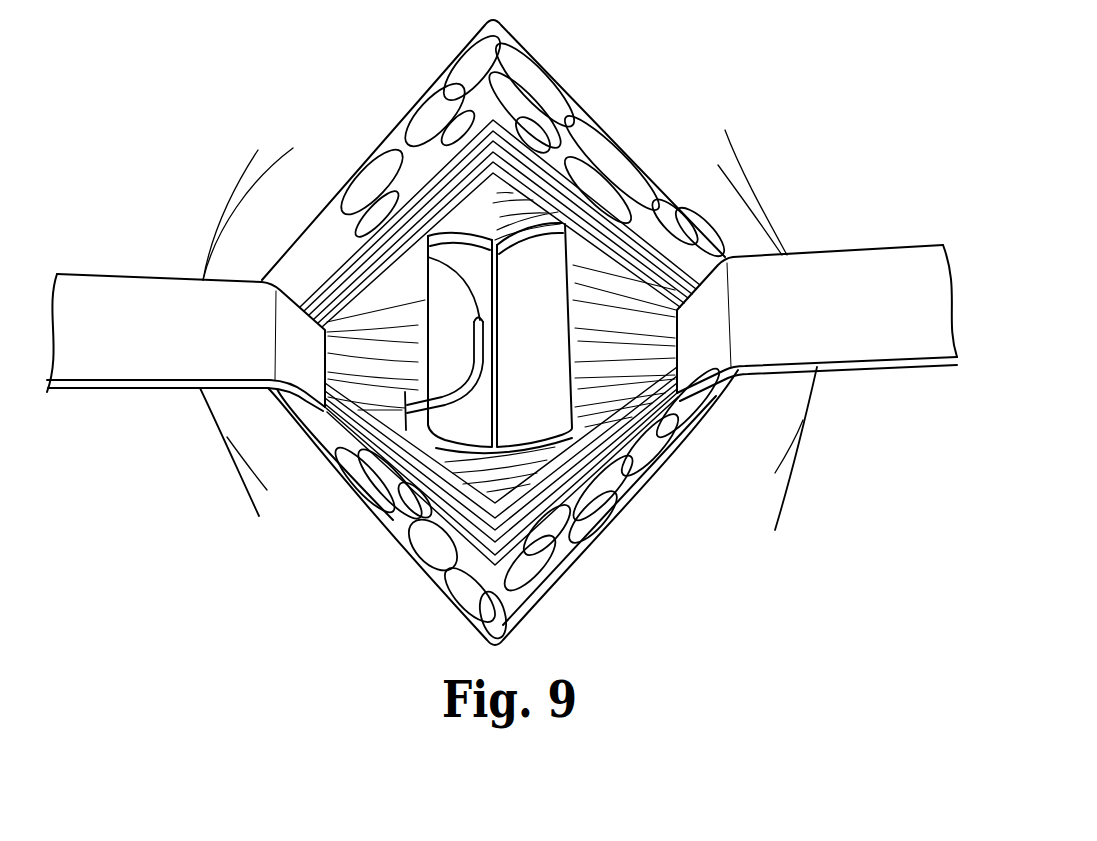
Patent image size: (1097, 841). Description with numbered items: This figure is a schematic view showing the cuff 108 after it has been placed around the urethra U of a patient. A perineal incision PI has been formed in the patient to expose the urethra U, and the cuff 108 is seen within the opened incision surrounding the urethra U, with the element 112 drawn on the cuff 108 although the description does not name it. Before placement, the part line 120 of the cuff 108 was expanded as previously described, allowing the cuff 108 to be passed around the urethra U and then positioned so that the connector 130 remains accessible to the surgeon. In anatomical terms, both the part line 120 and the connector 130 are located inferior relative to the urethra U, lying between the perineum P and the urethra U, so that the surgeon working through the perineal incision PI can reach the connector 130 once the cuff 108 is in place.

The cuff 108 is at (559, 292).
The split cannula second half 112 is at (560, 397).
The part line 120 is at (491, 456).
The connector 130 is at (393, 260).
The urethra U is at (517, 207).
The perineal incision PI is at (690, 220).
The perineum P is at (727, 217).